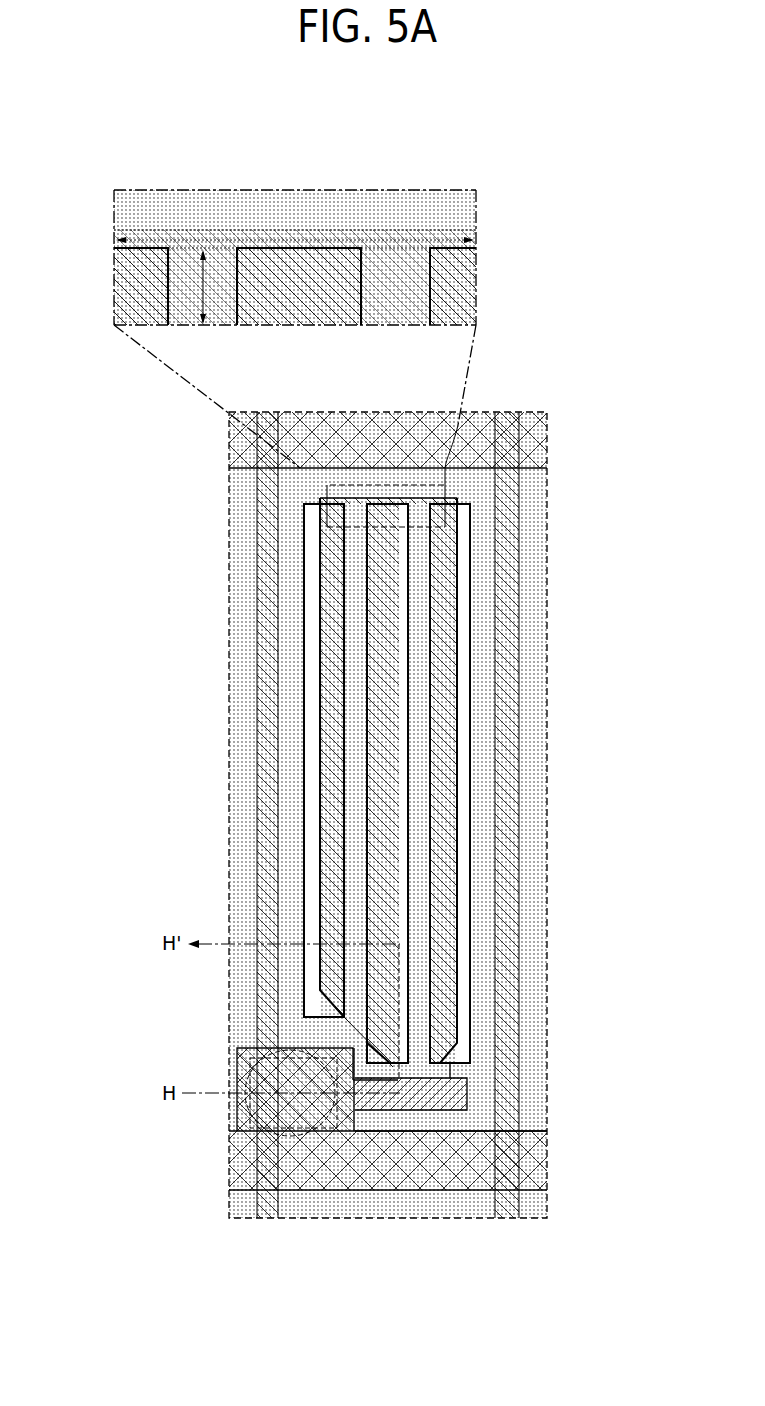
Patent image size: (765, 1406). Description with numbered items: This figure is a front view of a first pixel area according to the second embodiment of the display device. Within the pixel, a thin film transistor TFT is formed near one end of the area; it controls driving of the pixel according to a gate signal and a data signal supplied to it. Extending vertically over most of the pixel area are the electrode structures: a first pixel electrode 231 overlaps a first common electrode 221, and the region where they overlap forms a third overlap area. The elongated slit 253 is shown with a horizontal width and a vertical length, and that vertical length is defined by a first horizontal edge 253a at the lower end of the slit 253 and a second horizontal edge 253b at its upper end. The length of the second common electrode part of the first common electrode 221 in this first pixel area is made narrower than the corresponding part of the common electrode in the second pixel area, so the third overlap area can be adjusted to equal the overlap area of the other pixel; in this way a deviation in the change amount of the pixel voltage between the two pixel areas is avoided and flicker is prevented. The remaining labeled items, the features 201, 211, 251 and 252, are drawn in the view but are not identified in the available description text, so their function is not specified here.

The substrate 201 is at (240, 1160).
The first insulating layer 211 is at (270, 823).
The first common electrode 221 is at (357, 712).
The first pixel electrode 231 is at (337, 668).
The first pattern portion 251 is at (182, 282).
The second pattern layer 252 is at (327, 237).
The slit 253 is at (262, 297).
The first horizontal edge 253a is at (395, 1063).
The second horizontal edge 253b is at (387, 505).
The thin film transistor TFT is at (306, 1128).